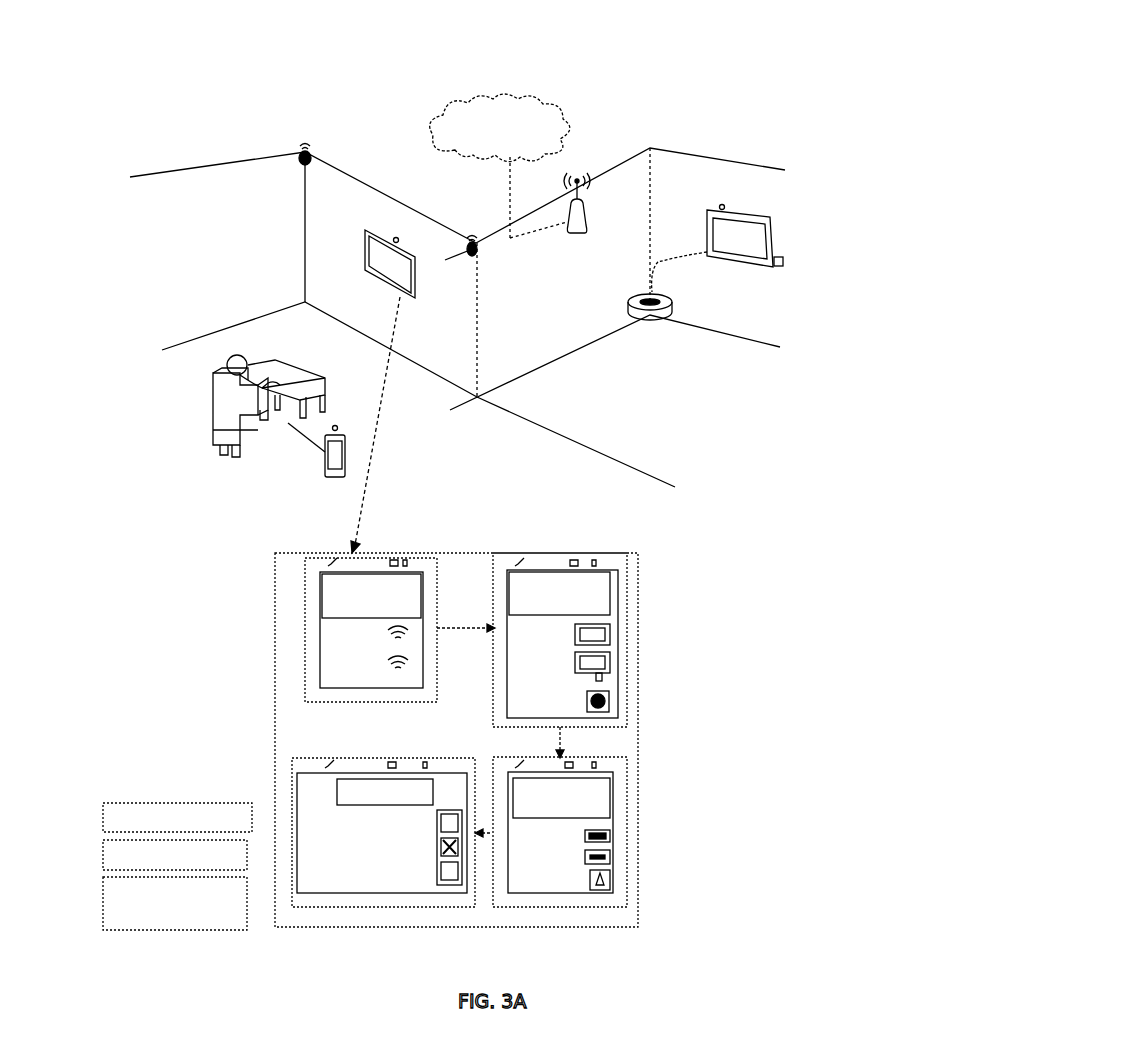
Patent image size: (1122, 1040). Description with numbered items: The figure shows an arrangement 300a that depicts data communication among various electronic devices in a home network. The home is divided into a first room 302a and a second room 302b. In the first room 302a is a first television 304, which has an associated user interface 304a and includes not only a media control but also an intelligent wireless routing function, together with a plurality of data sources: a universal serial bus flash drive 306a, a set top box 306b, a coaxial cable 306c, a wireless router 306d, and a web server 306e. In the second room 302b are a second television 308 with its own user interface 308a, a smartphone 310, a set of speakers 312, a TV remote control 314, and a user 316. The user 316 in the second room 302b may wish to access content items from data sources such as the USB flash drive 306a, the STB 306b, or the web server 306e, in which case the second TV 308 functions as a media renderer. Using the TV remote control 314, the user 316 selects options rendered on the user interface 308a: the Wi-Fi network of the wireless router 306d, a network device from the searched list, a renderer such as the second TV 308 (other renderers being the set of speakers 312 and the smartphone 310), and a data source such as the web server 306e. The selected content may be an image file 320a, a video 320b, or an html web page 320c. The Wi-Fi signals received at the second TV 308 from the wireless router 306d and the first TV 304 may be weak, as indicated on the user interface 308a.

The arrangement 300a is at (750, 92).
The first room 302a is at (650, 148).
The second room 302b is at (195, 165).
The first television 304 is at (714, 210).
The user interface 304a is at (746, 224).
The universal serial bus flash drive 306a is at (782, 252).
The set top box 306b is at (660, 298).
The coaxial cable 306c is at (660, 256).
The wireless router 306d is at (588, 222).
The web server 306e is at (500, 128).
The second television 308 is at (376, 230).
The user interface 308a is at (388, 277).
The smartphone 310 is at (341, 438).
The set of speakers 312 is at (388, 178).
The TV remote control 314 is at (262, 376).
The user 316 is at (236, 353).
The image file 320a is at (322, 823).
The video 320b is at (322, 848).
The html web page 320c is at (322, 875).